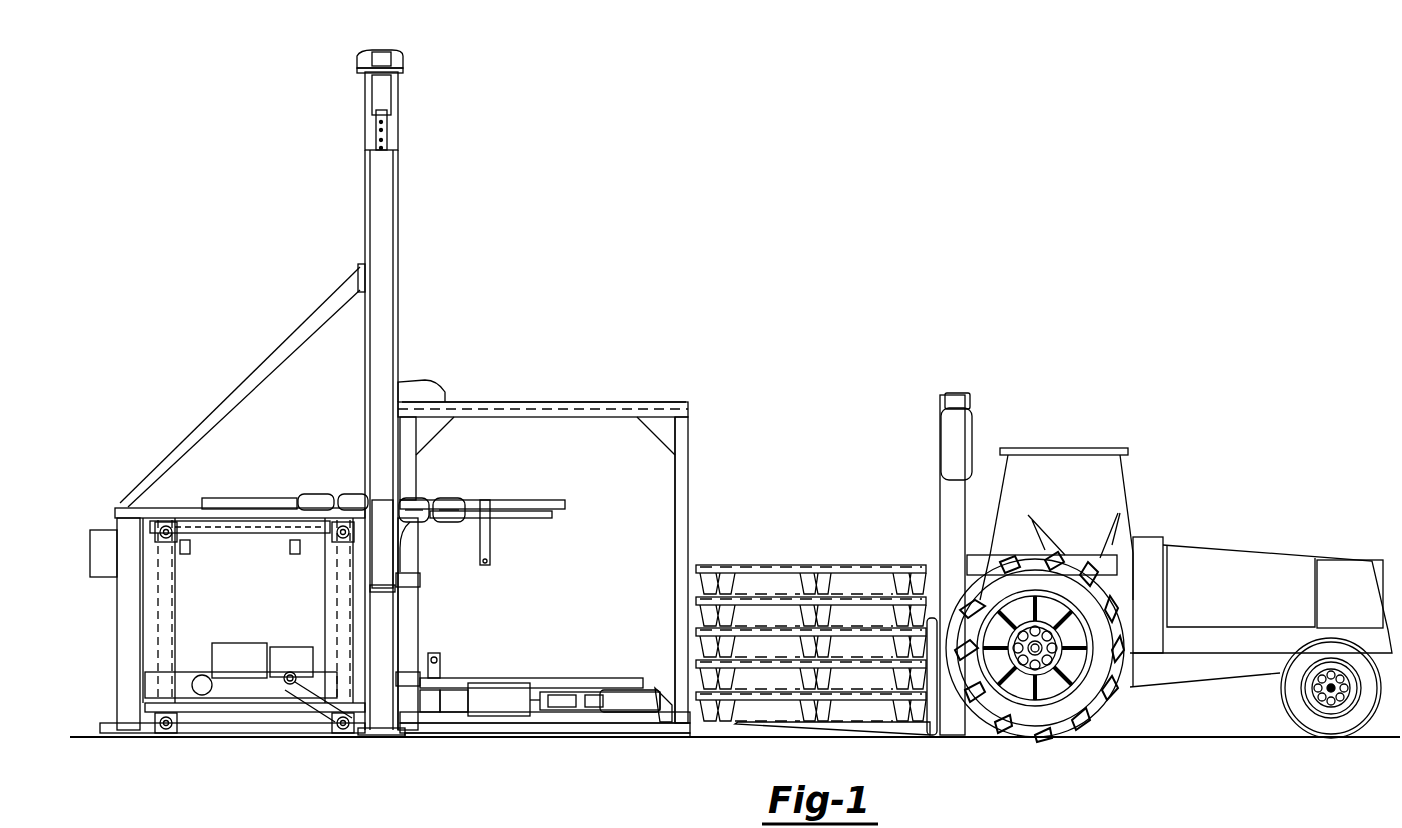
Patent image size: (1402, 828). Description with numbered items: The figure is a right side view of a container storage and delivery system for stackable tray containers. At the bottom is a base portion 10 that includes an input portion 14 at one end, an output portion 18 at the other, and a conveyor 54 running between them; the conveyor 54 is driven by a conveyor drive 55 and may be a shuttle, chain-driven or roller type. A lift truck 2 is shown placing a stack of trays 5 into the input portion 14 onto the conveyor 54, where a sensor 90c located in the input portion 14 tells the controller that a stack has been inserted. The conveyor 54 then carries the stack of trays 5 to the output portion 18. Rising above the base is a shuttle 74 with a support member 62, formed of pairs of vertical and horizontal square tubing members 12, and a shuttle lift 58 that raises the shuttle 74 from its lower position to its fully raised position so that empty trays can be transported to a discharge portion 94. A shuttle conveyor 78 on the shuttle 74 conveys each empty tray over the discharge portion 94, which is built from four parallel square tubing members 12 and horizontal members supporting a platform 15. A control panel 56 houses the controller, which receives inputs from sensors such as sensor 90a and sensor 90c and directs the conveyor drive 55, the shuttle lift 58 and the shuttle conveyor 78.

The lift truck 2 is at (1258, 562).
The stack of trays 5 is at (822, 567).
The base portion 10 is at (512, 727).
The vertical square tubing members 12 is at (390, 188).
The input portion 14 is at (583, 418).
The platform 15 is at (646, 402).
The output portion 18 is at (207, 705).
The conveyor 54 is at (590, 700).
The conveyor drive 55 is at (292, 684).
The control panel 56 is at (92, 550).
The shuttle lift 58 is at (478, 708).
The support member 62 is at (382, 268).
The shuttle 74 is at (335, 495).
The shuttle conveyor 78 is at (540, 497).
The sensor 90a is at (488, 563).
The sensor 90c is at (442, 659).
The discharge portion 94 is at (548, 402).